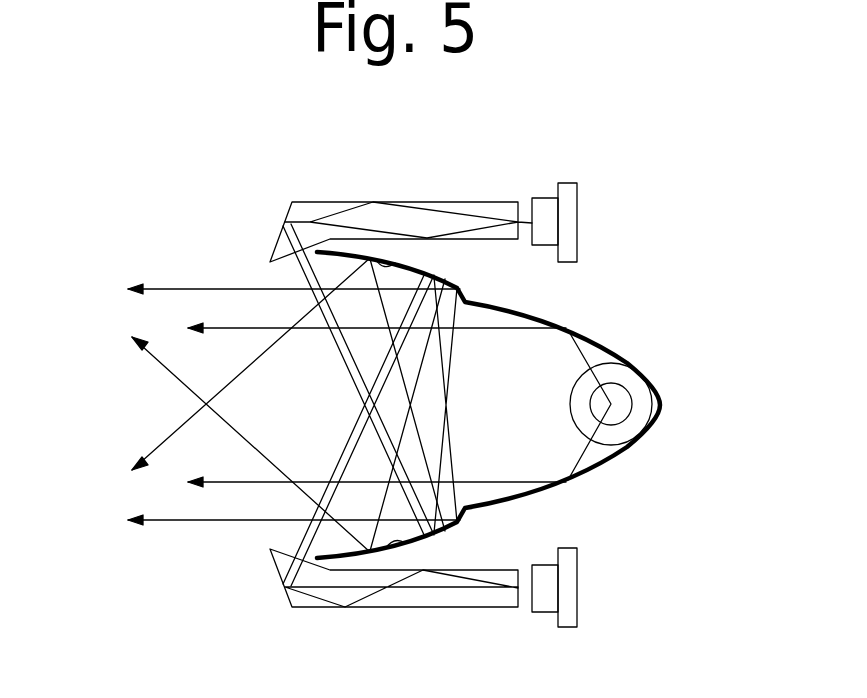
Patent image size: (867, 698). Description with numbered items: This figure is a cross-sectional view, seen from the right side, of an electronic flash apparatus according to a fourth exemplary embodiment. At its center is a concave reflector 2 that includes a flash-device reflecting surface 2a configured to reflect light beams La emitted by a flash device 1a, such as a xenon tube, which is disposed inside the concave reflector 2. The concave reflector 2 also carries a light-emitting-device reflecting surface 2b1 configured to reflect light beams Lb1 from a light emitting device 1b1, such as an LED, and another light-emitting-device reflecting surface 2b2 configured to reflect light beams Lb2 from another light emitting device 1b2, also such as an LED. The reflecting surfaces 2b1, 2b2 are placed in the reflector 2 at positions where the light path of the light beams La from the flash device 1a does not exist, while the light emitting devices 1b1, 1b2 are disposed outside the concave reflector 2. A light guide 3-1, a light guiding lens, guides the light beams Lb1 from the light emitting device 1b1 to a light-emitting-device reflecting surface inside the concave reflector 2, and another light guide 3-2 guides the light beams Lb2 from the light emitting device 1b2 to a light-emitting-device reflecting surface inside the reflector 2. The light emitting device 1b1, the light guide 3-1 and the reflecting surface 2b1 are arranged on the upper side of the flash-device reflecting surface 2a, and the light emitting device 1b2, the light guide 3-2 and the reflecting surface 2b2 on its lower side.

The concave reflector 2 is at (623, 322).
The flash-device reflecting surface 2a is at (523, 313).
The flash device 1a is at (611, 404).
The light-emitting-device reflecting surface 2b1 is at (400, 263).
The light-emitting-device reflecting surface 2b2 is at (408, 541).
The light guide 3-1 is at (367, 192).
The light guide 3-2 is at (377, 622).
The light emitting device 1b1 is at (532, 223).
The light emitting device 1b2 is at (530, 588).
The light beams Lb1 is at (265, 365).
The light beams Lb2 is at (263, 451).
The light beams La is at (377, 405).